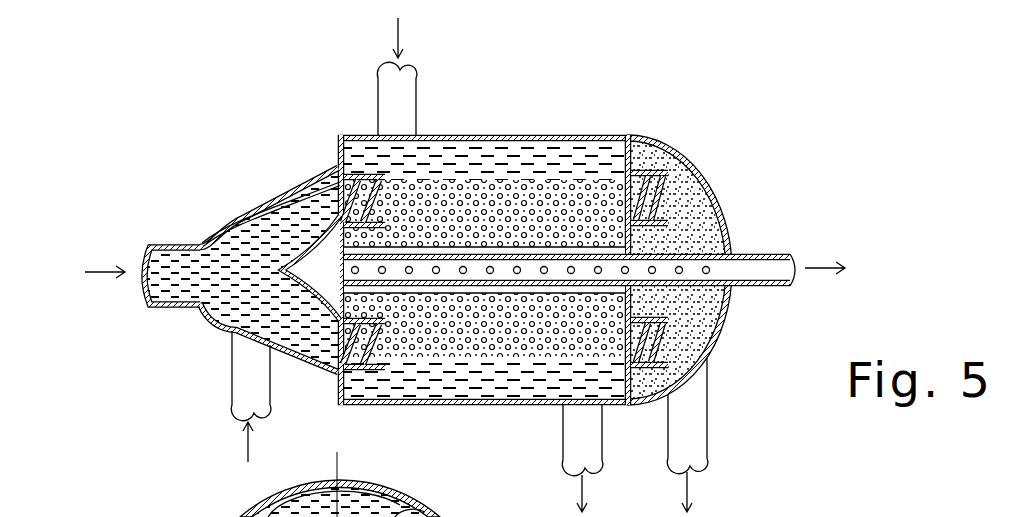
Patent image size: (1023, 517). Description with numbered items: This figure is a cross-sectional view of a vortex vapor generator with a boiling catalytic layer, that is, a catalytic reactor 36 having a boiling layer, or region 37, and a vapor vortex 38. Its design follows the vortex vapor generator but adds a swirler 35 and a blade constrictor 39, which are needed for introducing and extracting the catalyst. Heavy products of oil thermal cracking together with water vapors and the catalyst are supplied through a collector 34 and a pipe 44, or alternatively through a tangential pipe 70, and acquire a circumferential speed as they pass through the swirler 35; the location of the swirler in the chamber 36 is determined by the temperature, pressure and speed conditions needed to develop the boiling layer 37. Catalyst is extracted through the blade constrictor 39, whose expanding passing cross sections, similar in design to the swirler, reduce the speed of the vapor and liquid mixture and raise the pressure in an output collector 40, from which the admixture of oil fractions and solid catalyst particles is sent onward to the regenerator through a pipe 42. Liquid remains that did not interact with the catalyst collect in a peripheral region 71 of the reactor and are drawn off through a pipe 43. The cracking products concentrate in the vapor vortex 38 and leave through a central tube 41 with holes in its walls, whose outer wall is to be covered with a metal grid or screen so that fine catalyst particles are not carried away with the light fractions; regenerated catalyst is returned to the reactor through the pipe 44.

The collector 34 is at (177, 258).
The swirler 35 is at (340, 177).
The catalytic reactor 36 is at (430, 135).
The boiling layer 37 is at (450, 203).
The vapor vortex 38 is at (497, 250).
The blade constrictor 39 is at (643, 140).
The output collector 40 is at (686, 210).
The central tube 41 is at (763, 253).
The pipe 42 is at (688, 417).
The pipe 43 is at (582, 423).
The pipe 44 is at (245, 392).
The tangential pipe 70 is at (402, 112).
The peripheral region 71 is at (488, 382).